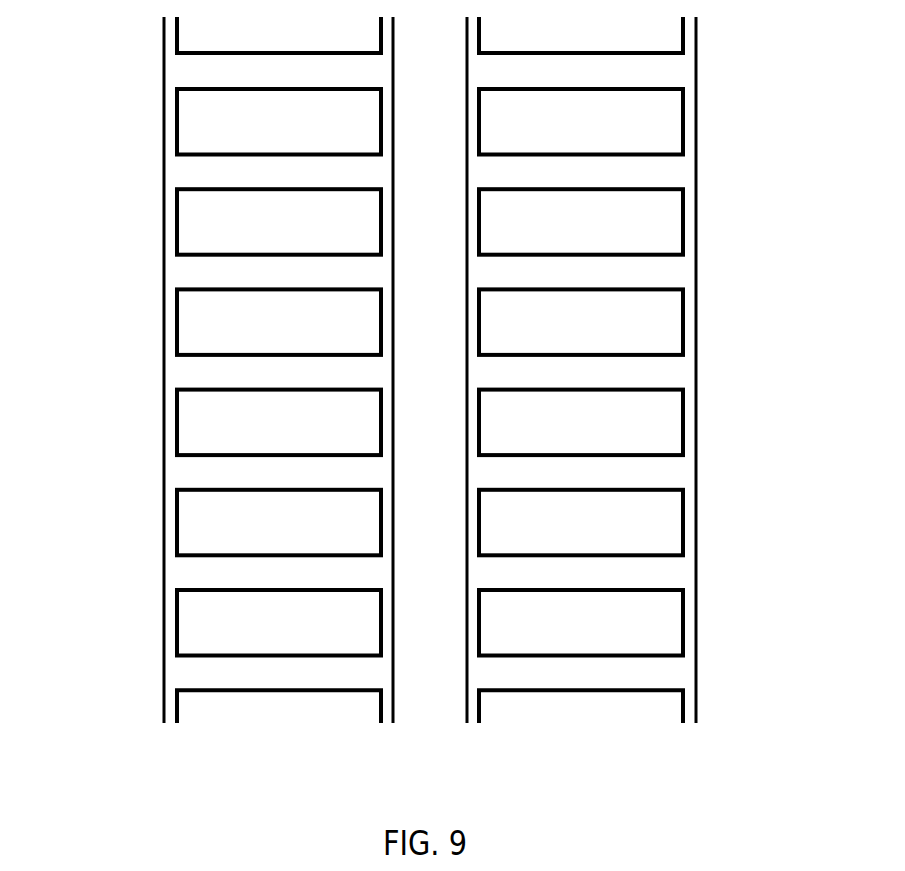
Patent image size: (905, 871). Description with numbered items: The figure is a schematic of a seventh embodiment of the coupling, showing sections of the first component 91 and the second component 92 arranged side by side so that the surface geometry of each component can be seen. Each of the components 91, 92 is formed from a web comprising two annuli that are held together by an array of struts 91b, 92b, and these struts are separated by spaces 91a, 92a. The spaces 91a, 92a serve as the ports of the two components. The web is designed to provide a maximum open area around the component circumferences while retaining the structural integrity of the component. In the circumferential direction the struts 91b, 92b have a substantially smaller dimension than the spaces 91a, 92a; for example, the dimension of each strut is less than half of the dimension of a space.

The first component 91 is at (210, 415).
The spaces 91a is at (208, 370).
The struts 91b is at (167, 526).
The second component 92 is at (651, 415).
The spaces 92a is at (652, 370).
The struts 92b is at (694, 526).